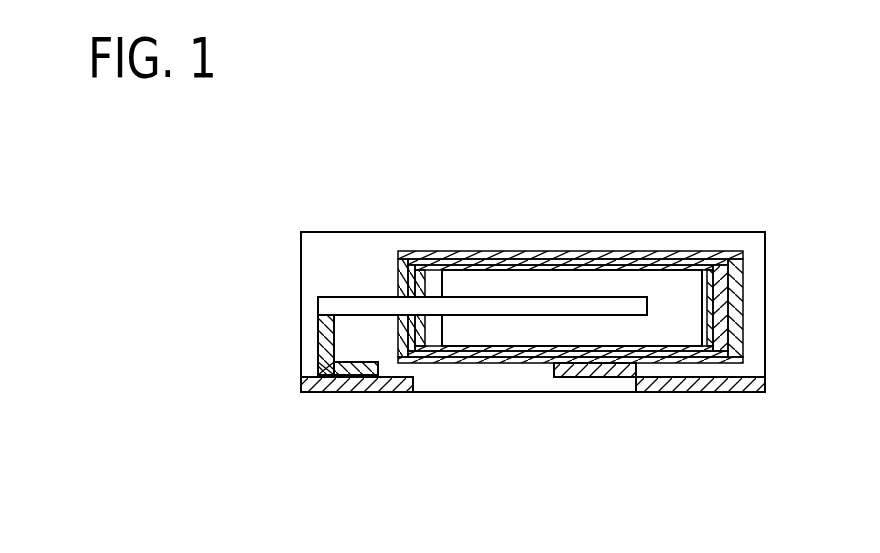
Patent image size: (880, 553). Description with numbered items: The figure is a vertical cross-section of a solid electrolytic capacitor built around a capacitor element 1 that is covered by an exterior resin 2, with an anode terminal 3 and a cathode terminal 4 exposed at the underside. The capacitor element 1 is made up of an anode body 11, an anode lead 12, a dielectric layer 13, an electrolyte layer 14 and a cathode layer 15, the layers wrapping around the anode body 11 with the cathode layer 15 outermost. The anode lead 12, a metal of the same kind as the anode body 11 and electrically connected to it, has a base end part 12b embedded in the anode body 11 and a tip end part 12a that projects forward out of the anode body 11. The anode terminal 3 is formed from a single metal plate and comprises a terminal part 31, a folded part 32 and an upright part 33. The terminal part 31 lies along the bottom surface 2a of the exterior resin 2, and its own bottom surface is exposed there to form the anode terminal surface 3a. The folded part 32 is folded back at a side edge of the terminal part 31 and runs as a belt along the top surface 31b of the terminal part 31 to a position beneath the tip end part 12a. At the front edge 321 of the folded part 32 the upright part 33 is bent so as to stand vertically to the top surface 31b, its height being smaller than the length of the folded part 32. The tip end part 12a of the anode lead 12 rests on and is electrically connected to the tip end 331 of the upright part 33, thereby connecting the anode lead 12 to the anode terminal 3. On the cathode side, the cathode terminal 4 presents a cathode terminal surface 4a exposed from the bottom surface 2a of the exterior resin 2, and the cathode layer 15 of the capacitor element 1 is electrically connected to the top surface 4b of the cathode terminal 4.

The capacitor element 1 is at (557, 180).
The anode body 11 is at (546, 285).
The anode lead 12 is at (513, 303).
The tip end part 12a is at (363, 307).
The base end part 12b is at (593, 316).
The dielectric layer 13 is at (470, 268).
The electrolyte layer 14 is at (420, 262).
The cathode layer 15 is at (403, 256).
The exterior resin 2 is at (665, 240).
The bottom surface 2a is at (510, 392).
The anode terminal 3 is at (385, 462).
The terminal part 31 is at (370, 378).
The top surface 31b is at (396, 376).
The folded part 32 is at (340, 368).
The front edge 321 is at (321, 353).
The upright part 33 is at (311, 360).
The tip end 331 is at (319, 310).
The anode terminal surface 3a is at (388, 392).
The cathode terminal 4 is at (723, 383).
The cathode terminal surface 4a is at (703, 392).
The top surface 4b is at (637, 363).